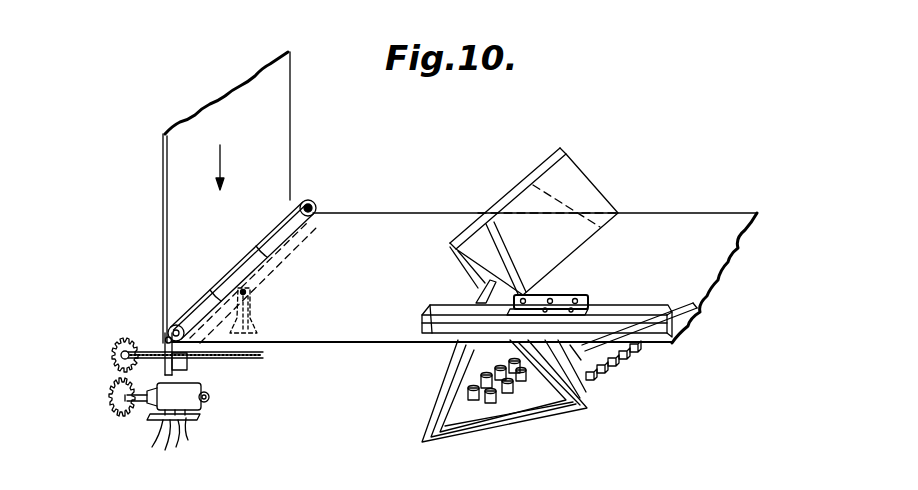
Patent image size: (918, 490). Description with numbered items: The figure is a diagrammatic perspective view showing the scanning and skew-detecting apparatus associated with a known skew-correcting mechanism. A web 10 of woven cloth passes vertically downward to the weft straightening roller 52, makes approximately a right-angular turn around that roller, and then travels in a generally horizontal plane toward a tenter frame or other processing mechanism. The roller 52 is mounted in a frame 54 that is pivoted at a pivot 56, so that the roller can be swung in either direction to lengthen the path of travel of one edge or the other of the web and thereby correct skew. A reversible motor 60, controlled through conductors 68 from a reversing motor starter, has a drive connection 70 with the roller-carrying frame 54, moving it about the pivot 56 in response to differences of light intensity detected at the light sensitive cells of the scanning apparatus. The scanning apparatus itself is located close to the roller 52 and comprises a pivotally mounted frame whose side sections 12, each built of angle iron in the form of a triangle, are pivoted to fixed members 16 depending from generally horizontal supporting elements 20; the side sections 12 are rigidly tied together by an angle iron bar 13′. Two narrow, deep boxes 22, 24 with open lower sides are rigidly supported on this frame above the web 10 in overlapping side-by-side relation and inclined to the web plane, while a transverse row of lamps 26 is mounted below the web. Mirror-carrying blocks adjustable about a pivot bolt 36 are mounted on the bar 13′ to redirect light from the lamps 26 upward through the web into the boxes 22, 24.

The web 10 is at (185, 198).
The side section 12 is at (557, 420).
The angle iron bar 13′ is at (645, 356).
The fixed member 16 is at (588, 351).
The supporting element 20 is at (618, 312).
The box 22 is at (451, 246).
The box 24 is at (577, 187).
The lamp 26 is at (497, 359).
The pivot bolt 36 is at (613, 380).
The weft straightening roller 52 is at (203, 307).
The frame 54 is at (168, 345).
The pivot 56 is at (250, 308).
The reversible motor 60 is at (200, 410).
The conductors 68 is at (169, 447).
The drive connection 70 is at (110, 381).